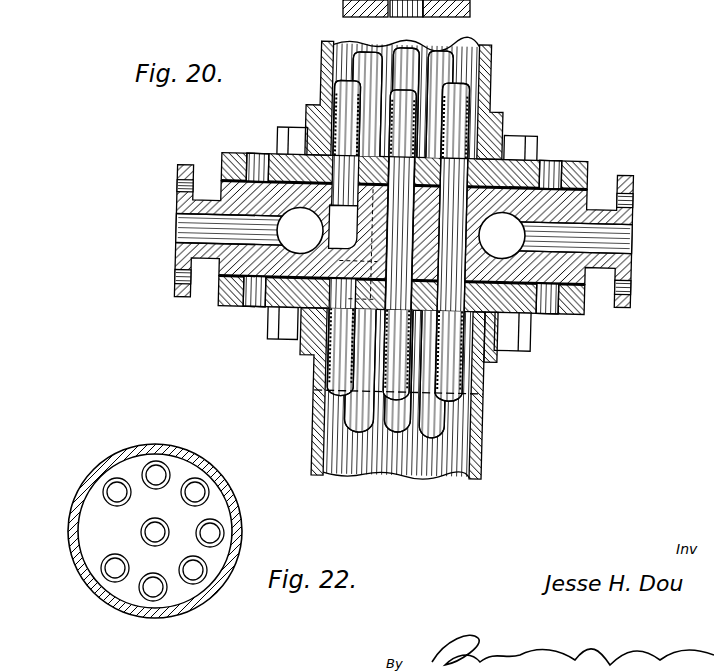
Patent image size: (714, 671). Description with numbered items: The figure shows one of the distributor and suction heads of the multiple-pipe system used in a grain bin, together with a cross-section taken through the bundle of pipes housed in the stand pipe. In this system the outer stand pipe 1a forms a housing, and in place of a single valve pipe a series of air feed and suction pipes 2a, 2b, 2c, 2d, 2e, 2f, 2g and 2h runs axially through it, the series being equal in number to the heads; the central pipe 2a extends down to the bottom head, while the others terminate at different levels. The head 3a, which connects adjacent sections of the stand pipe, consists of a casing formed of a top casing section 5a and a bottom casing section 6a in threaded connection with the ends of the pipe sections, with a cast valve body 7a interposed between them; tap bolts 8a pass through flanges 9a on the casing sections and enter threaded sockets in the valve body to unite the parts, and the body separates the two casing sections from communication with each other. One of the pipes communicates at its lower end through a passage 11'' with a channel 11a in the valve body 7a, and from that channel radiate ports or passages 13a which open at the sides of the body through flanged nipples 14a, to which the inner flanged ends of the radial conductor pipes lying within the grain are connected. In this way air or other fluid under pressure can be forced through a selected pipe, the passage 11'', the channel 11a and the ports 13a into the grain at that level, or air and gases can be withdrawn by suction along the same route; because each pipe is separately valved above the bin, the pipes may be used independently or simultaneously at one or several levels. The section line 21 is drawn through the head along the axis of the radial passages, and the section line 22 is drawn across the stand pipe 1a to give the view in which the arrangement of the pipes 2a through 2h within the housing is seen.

In FIG. 20, the stand pipe 1a is at (320, 62).
In FIG. 22, the stand pipe 1a is at (97, 462).
In FIG. 20, the central air feed and suction pipe 2a is at (405, 118).
In FIG. 22, the central air feed and suction pipe 2a is at (158, 532).
In FIG. 20, the air feed and suction pipe 2b is at (345, 95).
In FIG. 22, the air feed and suction pipe 2b is at (112, 492).
In FIG. 20, the air feed and suction pipe 2c is at (362, 56).
In FIG. 22, the air feed and suction pipe 2c is at (158, 470).
In FIG. 20, the air feed and suction pipe 2d is at (405, 63).
In FIG. 22, the air feed and suction pipe 2d is at (200, 488).
In FIG. 20, the air feed and suction pipe 2e is at (440, 68).
In FIG. 22, the air feed and suction pipe 2e is at (216, 534).
In FIG. 20, the air feed and suction pipe 2f is at (455, 88).
In FIG. 22, the air feed and suction pipe 2f is at (205, 568).
In FIG. 22, the air feed and suction pipe 2g is at (162, 603).
In FIG. 22, the air feed and suction pipe 2h is at (121, 585).
In FIG. 20, the combined distributor and suction head 3a is at (592, 165).
In FIG. 20, the top casing section 5a is at (512, 132).
In FIG. 20, the bottom casing section 6a is at (491, 362).
In FIG. 20, the valve body 7a is at (586, 207).
In FIG. 20, the tap bolt 8a is at (530, 143).
In FIG. 20, the flange 9a is at (578, 164).
In FIG. 20, the passage 11'' is at (300, 230).
In FIG. 20, the channel 11a is at (512, 237).
In FIG. 20, the radial port or passage 13a is at (180, 226).
In FIG. 20, the flanged nipple 14a is at (180, 197).
In FIG. 20, the section line 21— 21 is at (178, 213).
In FIG. 20, the section line 22— 22 is at (323, 395).